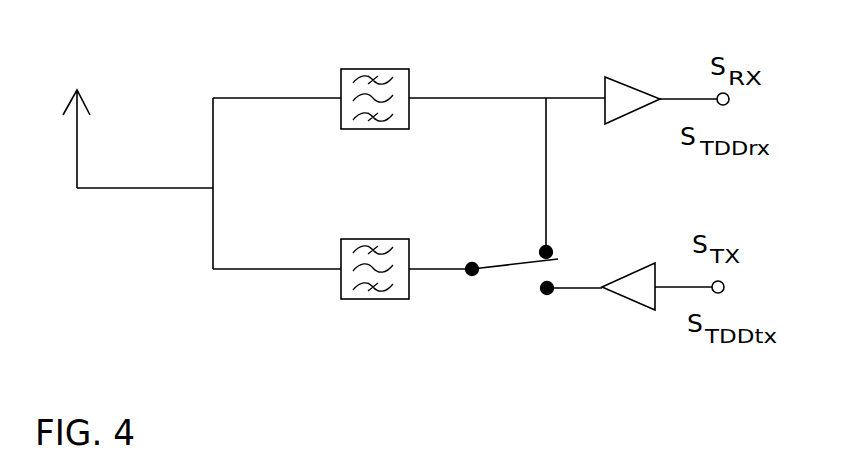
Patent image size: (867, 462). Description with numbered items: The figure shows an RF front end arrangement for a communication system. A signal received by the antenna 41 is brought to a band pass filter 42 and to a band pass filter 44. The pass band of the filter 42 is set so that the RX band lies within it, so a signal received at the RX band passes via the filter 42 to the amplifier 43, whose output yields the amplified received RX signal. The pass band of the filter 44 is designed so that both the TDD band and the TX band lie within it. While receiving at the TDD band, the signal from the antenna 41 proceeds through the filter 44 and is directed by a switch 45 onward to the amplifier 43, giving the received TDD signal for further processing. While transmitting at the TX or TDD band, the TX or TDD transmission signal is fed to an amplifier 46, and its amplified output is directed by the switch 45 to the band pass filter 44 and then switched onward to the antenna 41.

The antenna 41 is at (90, 115).
The band pass filter 42 is at (415, 119).
The amplifier 43 is at (630, 82).
The band pass filter 44 is at (413, 253).
The switch 45 is at (518, 270).
The amplifier 46 is at (637, 265).